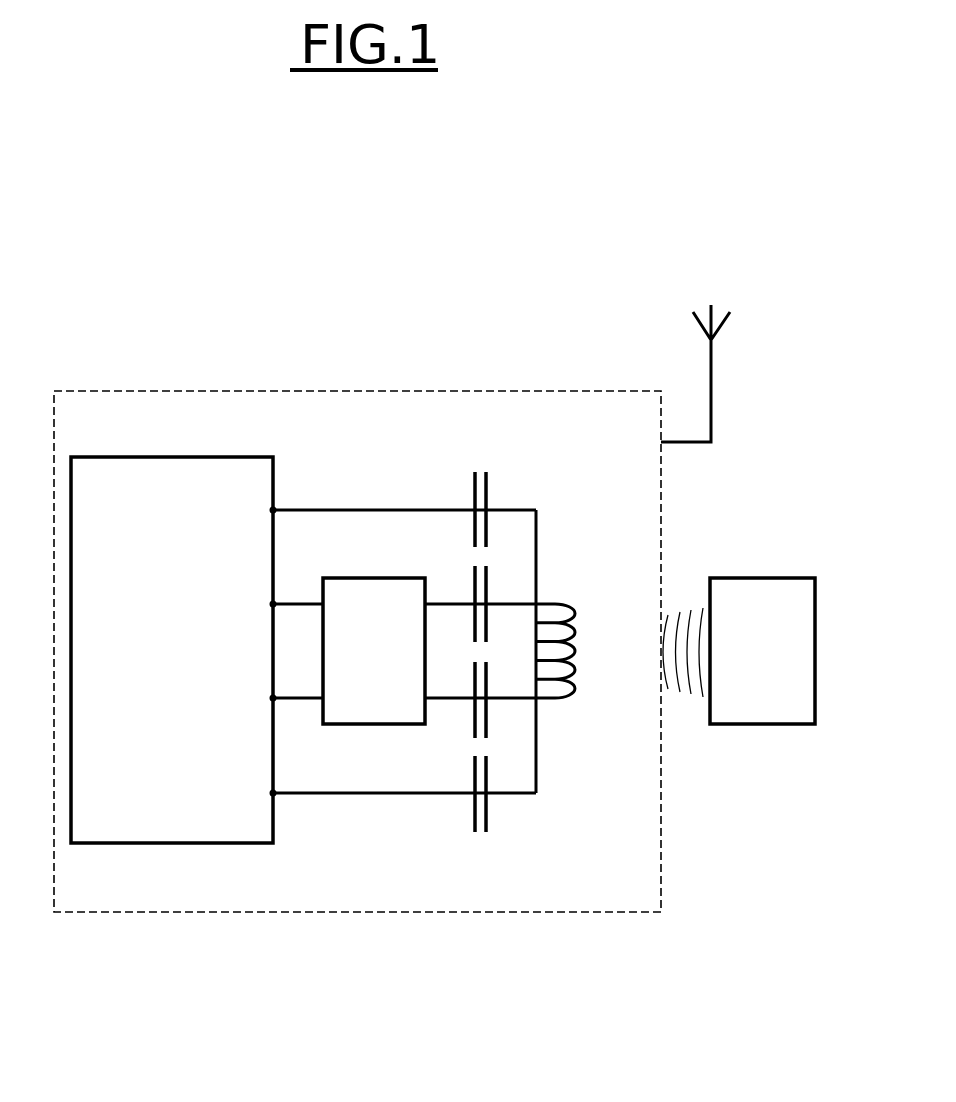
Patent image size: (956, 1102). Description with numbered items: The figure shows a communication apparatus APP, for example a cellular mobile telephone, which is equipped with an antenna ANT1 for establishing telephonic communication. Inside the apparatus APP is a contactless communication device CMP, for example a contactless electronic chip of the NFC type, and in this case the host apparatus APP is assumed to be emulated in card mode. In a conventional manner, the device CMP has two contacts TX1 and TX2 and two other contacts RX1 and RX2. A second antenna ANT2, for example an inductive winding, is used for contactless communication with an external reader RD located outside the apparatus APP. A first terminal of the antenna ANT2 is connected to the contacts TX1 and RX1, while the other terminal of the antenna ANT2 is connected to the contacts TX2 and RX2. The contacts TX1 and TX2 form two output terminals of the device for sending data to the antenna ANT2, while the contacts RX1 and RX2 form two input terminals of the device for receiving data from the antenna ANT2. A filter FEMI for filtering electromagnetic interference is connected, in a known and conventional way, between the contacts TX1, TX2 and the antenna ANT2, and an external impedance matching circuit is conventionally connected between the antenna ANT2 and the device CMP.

The communication apparatus APP is at (357, 391).
The contactless communication device CMP is at (172, 457).
The antenna ANT1 is at (716, 358).
The antenna ANT2 is at (582, 697).
The filter FEMI is at (374, 651).
The external reader RD is at (739, 651).
The contact RX1 is at (375, 511).
The contact TX1 is at (378, 604).
The contact TX2 is at (377, 698).
The contact RX2 is at (375, 794).